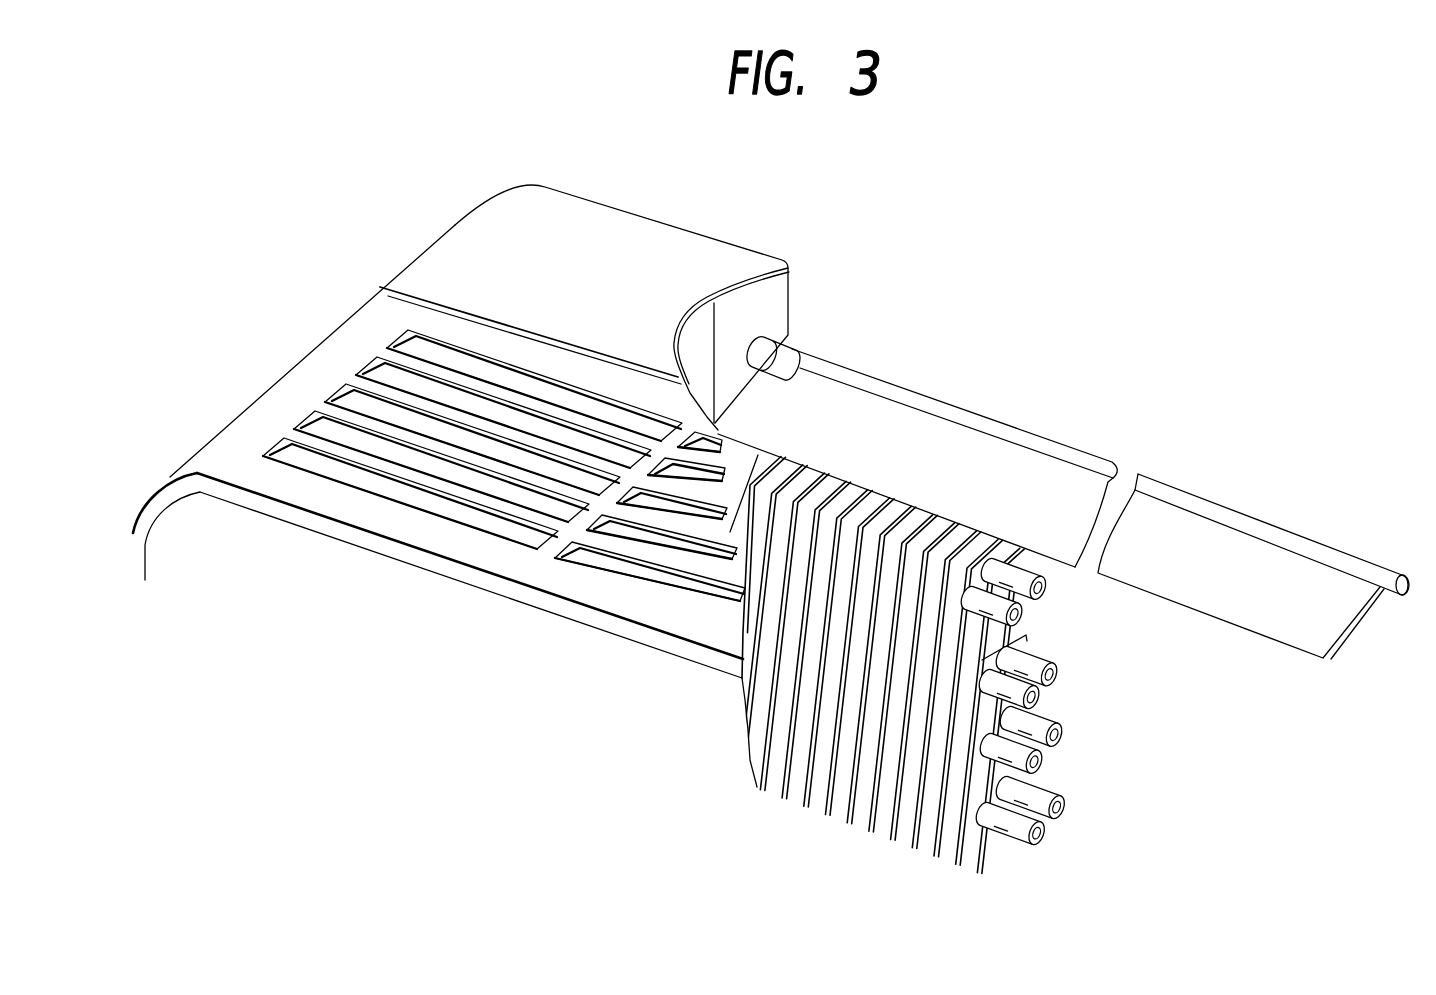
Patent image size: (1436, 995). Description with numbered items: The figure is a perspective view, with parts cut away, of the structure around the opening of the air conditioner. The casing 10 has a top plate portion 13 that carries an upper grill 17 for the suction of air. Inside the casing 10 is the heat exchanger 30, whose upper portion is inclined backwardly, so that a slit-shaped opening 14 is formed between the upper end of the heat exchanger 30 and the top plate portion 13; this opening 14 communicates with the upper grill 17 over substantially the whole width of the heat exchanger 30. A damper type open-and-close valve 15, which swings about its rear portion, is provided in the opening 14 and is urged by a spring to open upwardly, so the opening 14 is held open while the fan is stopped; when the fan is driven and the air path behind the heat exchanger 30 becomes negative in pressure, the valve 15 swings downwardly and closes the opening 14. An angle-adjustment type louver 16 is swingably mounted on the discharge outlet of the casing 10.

The casing 10 is at (564, 207).
The top plate portion 13 is at (463, 327).
The slit-shaped opening 14 is at (1093, 522).
The damper type open-and-close valve 15 is at (945, 437).
The angle-adjustment type louver 16 is at (783, 338).
The upper grill 17 is at (366, 402).
The heat exchanger 30 is at (810, 723).